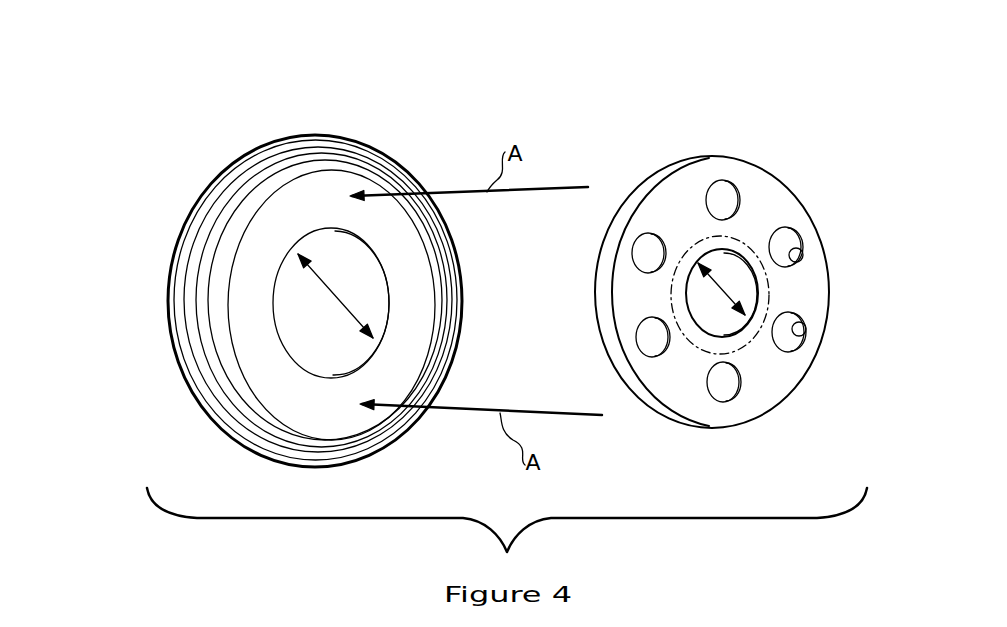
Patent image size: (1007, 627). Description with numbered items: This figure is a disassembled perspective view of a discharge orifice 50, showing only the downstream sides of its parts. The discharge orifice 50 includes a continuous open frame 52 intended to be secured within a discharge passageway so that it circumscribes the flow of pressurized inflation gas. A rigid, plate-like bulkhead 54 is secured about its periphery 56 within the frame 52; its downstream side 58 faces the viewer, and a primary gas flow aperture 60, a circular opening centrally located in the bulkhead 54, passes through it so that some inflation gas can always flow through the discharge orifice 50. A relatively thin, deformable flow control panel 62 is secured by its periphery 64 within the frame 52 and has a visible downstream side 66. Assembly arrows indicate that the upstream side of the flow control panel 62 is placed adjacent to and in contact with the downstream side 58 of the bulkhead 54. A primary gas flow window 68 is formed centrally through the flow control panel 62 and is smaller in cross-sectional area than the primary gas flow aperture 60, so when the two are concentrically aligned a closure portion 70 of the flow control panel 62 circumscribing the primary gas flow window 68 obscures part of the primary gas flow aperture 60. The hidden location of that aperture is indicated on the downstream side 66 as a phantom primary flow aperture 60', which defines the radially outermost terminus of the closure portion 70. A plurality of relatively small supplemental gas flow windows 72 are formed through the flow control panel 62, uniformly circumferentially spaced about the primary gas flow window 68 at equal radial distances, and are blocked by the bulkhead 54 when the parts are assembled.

The discharge orifice 50 is at (703, 118).
The continuous open frame 52 is at (227, 198).
The bulkhead 54 is at (255, 283).
The periphery 56 is at (231, 309).
The downstream side 58 is at (315, 413).
The primary gas flow aperture 60 is at (397, 298).
The phantom primary flow aperture 60' is at (643, 190).
The flow control panel 62 is at (833, 240).
The periphery 64 is at (771, 180).
The downstream side 66 is at (775, 389).
The primary gas flow window 68 is at (722, 294).
The closure portion 70 is at (716, 341).
The supplemental gas flow windows 72 is at (803, 337).